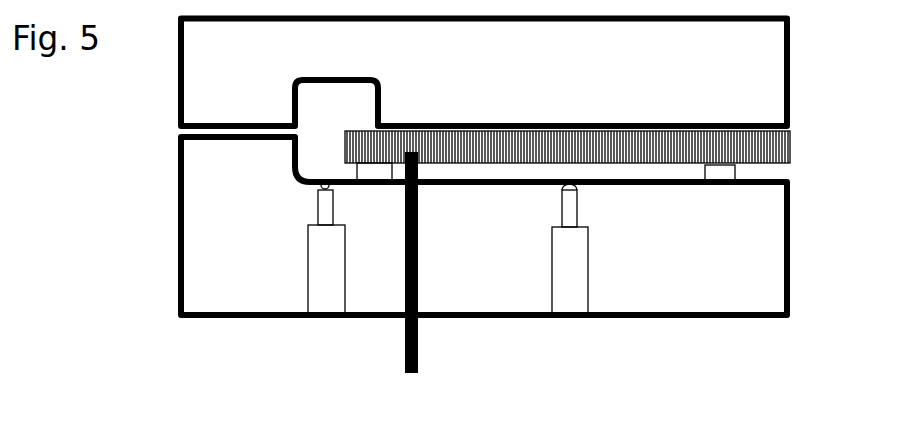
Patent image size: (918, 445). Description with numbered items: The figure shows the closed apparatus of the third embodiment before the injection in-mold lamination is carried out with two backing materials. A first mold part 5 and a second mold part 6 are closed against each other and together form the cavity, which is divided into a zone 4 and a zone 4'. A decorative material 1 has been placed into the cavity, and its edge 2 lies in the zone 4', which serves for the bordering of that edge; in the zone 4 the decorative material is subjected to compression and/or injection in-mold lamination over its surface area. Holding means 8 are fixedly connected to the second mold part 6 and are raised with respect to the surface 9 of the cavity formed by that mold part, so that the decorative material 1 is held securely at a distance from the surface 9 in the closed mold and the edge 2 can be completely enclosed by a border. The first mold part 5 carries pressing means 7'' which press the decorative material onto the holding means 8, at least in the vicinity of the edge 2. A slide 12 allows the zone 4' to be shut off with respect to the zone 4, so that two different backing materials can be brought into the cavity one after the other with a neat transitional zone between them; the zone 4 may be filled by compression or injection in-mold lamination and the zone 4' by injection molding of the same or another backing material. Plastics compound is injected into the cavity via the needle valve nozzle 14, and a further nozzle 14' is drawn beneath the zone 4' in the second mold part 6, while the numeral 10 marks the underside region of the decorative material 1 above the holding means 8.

The decorative material 1 is at (523, 150).
The edge 2 is at (345, 138).
The zone of the cavity 4 is at (529, 207).
The zone of the cavity 4' is at (317, 145).
The first mold part 5 is at (234, 89).
The second mold part 6 is at (234, 238).
The pressing means 7'' is at (555, 94).
The holding means 8 is at (375, 170).
The surface 9 is at (758, 181).
The underside of substrate 10 is at (668, 133).
The slide 12 is at (418, 338).
The needle valve nozzle 14 is at (570, 248).
The lifting actuator 14' is at (282, 247).